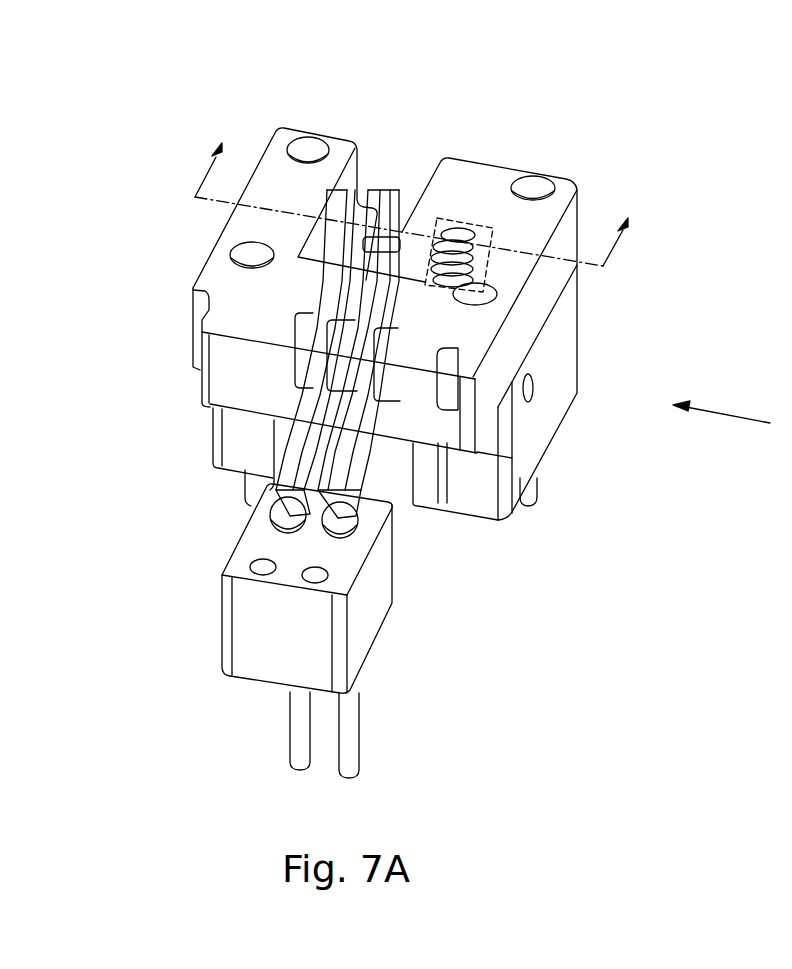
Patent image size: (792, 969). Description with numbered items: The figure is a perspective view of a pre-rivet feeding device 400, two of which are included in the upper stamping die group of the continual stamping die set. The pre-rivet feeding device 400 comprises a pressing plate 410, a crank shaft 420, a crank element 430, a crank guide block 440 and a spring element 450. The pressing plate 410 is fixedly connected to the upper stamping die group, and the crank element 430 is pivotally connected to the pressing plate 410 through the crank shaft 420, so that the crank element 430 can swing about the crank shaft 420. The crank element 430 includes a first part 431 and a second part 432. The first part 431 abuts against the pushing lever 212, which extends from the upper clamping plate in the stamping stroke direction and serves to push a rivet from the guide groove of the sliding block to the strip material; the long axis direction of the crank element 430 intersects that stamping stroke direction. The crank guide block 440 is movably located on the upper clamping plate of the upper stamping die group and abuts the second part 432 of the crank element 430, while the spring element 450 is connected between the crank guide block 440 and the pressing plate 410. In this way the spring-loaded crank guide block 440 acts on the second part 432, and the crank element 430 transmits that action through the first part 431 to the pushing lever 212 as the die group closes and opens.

The pre-rivet feeding device 400 is at (710, 60).
The pressing plate 410 is at (213, 280).
The crank shaft 420 is at (430, 352).
The crank element 430 is at (300, 399).
The first part 431 is at (285, 510).
The second part 432 is at (357, 200).
The crank guide block 440 is at (392, 225).
The spring element 450 is at (458, 232).
The pushing lever 212 is at (303, 740).